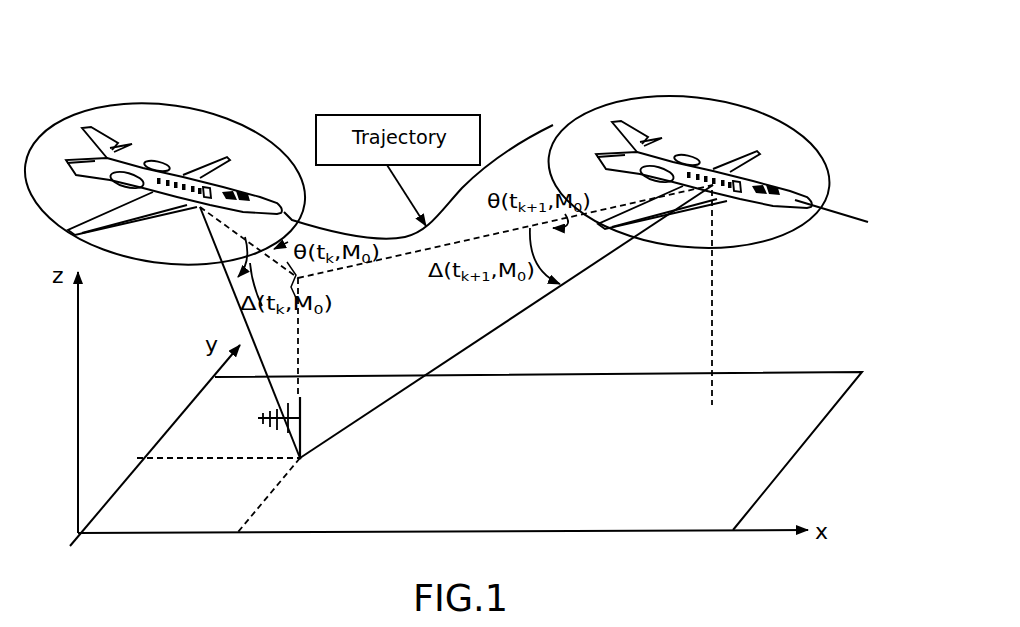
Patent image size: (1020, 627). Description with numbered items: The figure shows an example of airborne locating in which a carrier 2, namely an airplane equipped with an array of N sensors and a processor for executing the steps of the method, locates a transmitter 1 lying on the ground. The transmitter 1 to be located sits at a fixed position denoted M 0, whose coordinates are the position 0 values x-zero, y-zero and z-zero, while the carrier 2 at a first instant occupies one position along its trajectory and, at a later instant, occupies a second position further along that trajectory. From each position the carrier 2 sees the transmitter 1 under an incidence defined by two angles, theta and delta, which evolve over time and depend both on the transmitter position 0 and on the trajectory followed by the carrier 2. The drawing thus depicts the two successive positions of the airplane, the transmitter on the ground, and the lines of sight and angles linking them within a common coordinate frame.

The transmitter 1 is at (303, 459).
The carrier 2 is at (550, 124).
The transmitter position M0 = (x0, y0, z0) 0 is at (201, 501).